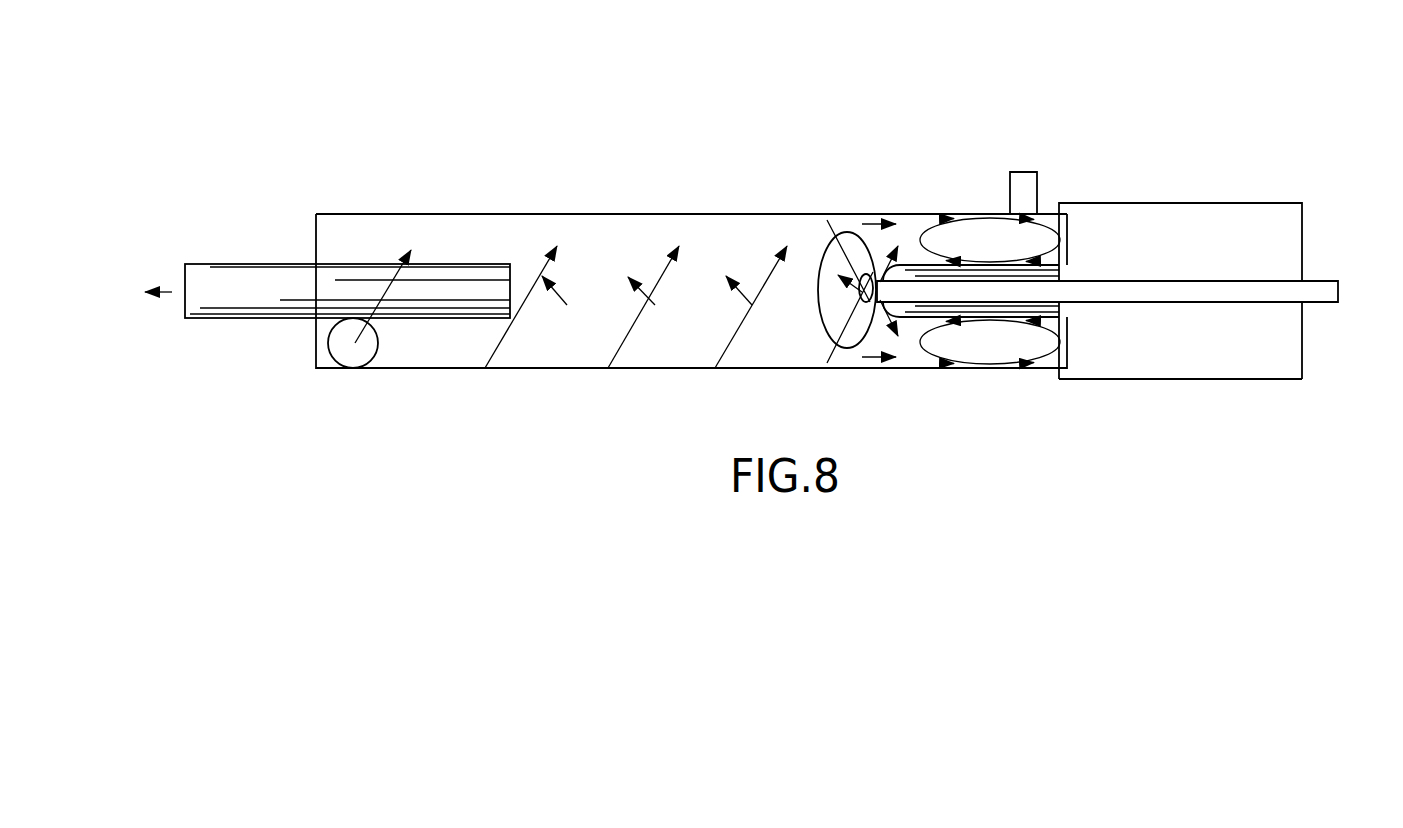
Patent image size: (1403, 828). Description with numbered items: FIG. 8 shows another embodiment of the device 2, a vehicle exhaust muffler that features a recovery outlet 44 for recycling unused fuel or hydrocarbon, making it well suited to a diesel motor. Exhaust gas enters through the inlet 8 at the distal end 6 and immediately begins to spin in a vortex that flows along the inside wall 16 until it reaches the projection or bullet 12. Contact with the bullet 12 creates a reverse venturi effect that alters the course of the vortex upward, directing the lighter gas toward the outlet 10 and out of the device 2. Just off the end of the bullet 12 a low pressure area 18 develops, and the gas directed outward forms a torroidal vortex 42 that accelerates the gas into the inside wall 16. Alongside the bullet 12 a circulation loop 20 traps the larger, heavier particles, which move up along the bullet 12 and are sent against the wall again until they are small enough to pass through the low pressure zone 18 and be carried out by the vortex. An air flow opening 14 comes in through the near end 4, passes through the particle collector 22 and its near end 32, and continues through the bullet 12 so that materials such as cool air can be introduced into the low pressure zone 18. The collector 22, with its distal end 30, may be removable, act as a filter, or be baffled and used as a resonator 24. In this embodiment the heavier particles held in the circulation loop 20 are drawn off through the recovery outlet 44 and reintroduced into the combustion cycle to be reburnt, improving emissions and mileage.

The device 2 is at (554, 124).
The near end 4 is at (1230, 319).
The distal end 6 is at (316, 223).
The inlet 8 is at (357, 360).
The outlet 10 is at (185, 314).
The projection or bullet 12 is at (910, 318).
The air flow opening 14 is at (1090, 292).
The inside wall 16 is at (600, 214).
The low pressure area 18 is at (868, 275).
The circulation loop 20 is at (992, 217).
The particle collector 22 is at (1303, 258).
The resonator 24 is at (1293, 367).
The distal end of the collector 30 is at (1072, 380).
The near end of the collector 32 is at (1303, 330).
The torroidal vortex 42 is at (824, 262).
The recovery outlet 44 is at (1023, 172).